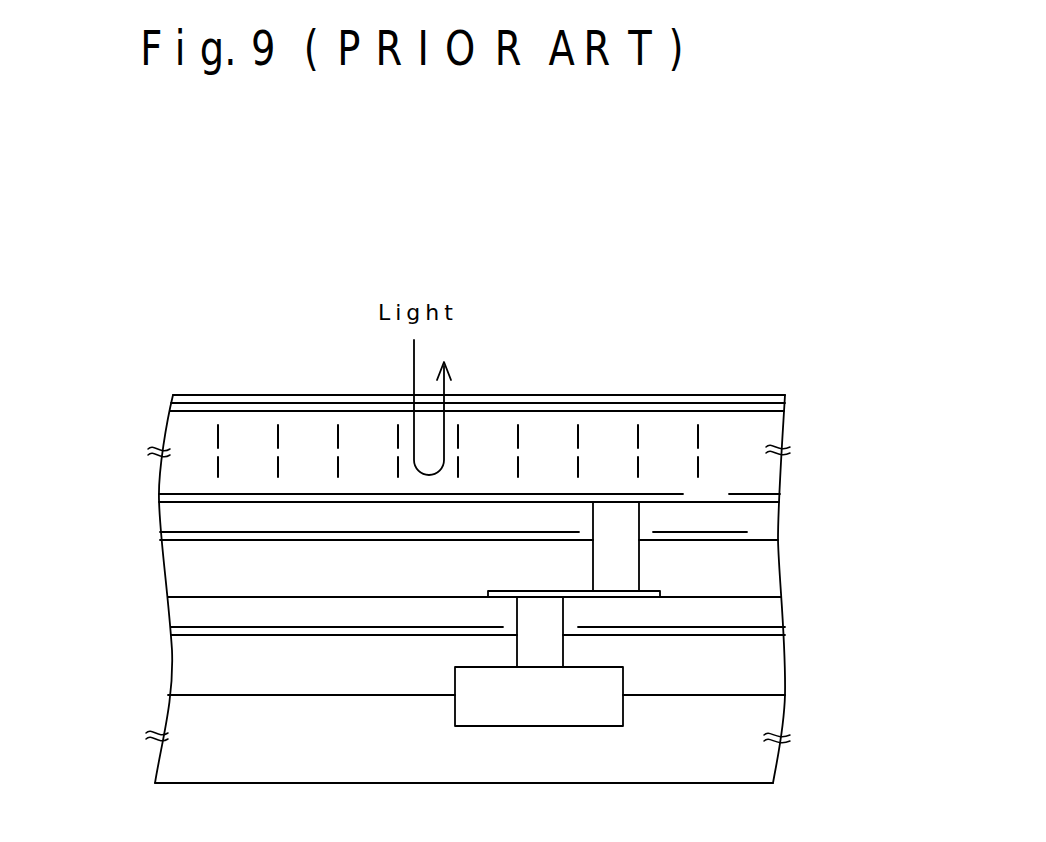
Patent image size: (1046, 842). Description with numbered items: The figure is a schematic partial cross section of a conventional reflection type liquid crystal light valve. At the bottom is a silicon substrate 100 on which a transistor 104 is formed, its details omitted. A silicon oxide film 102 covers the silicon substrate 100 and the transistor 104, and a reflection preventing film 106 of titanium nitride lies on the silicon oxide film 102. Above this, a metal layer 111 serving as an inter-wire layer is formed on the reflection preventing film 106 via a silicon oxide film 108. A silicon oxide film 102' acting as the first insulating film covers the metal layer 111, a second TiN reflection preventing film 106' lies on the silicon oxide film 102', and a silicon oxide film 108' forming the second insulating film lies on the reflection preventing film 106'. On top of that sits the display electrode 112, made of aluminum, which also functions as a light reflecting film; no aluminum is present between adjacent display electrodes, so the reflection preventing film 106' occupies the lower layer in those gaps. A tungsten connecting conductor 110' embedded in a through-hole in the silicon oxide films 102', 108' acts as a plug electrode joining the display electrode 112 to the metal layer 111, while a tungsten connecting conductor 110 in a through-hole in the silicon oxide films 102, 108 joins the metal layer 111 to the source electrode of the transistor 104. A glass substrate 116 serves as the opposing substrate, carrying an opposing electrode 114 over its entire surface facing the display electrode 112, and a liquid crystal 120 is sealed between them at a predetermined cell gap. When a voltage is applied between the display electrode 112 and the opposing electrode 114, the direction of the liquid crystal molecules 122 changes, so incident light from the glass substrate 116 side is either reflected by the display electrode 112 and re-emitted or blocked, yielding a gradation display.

The silicon substrate 100 is at (773, 765).
The silicon oxide film 102 is at (532, 684).
The silicon oxide film 102' is at (538, 578).
The transistor 104 is at (553, 727).
The reflection preventing film 106 is at (483, 637).
The reflection preventing film 106' is at (475, 531).
The silicon oxide film 108 is at (537, 607).
The silicon oxide film 108' is at (536, 499).
The connecting conductor 110 is at (458, 633).
The connecting conductor 110' is at (545, 546).
The metal layer 111 is at (488, 592).
The display electrode 112 is at (780, 498).
The opposing electrode 114 is at (793, 409).
The glass substrate 116 is at (787, 396).
The liquid crystal 120 is at (790, 430).
The liquid crystal molecules 122 is at (336, 436).